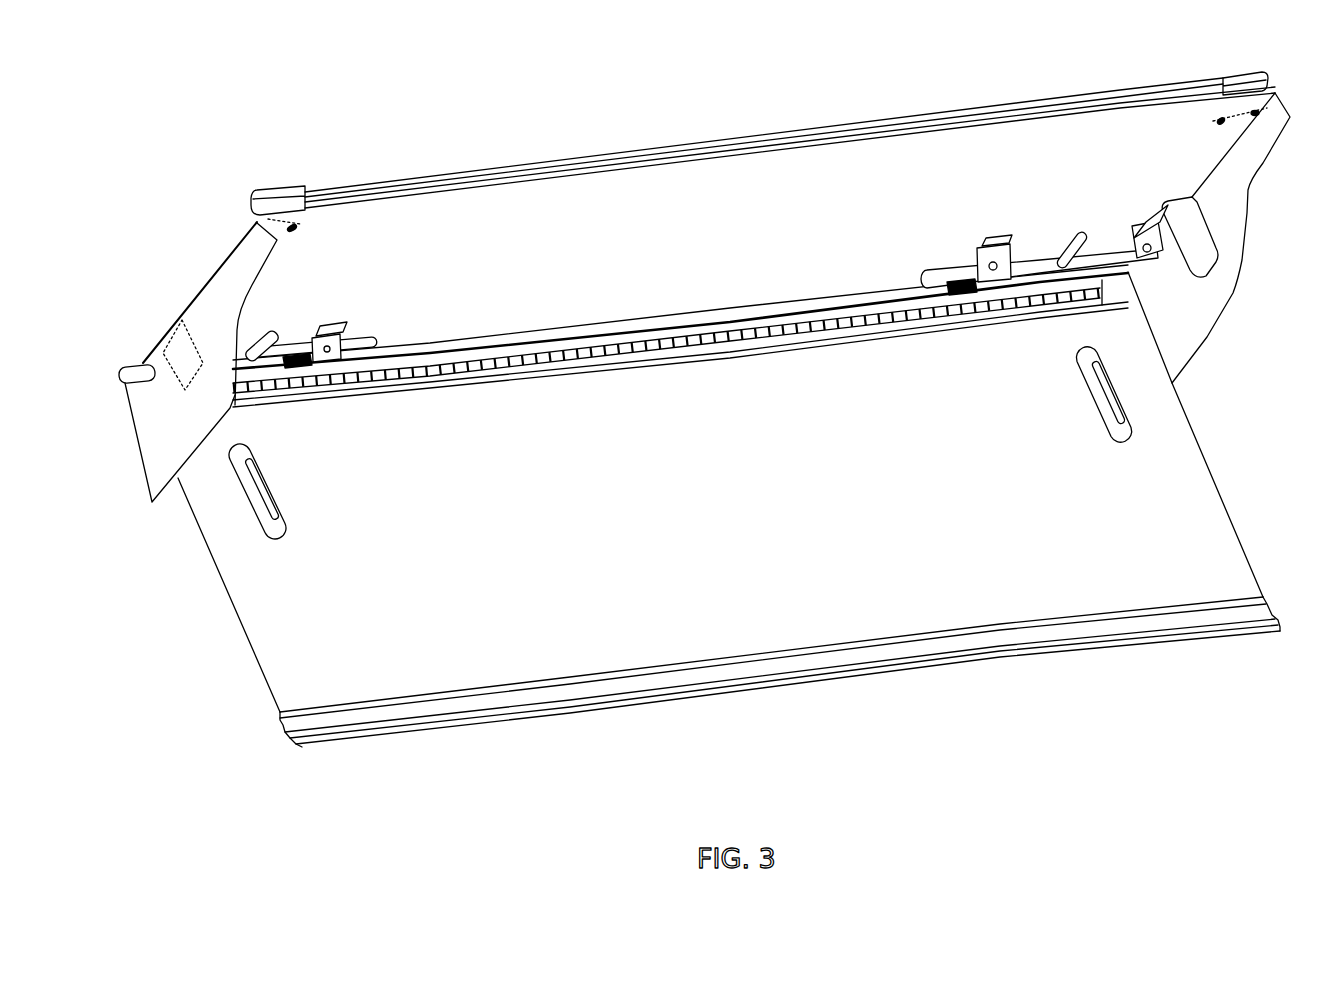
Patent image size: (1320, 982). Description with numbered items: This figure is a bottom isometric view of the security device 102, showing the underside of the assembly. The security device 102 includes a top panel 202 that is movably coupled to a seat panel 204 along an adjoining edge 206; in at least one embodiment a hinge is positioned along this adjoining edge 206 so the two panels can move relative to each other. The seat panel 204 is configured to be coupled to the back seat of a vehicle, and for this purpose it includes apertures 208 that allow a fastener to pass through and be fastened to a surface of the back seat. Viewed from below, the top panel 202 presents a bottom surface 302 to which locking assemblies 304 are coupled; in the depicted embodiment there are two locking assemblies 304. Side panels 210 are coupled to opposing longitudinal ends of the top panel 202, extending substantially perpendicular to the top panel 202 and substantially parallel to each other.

The security device 102 is at (696, 409).
The top panel 202 is at (552, 160).
The seat panel 204 is at (243, 643).
The adjoining edge 206 is at (762, 334).
The apertures 208 is at (275, 510).
The side panels 210 is at (137, 463).
The bottom surface 302 is at (807, 167).
The locking assembly 304 is at (348, 302).